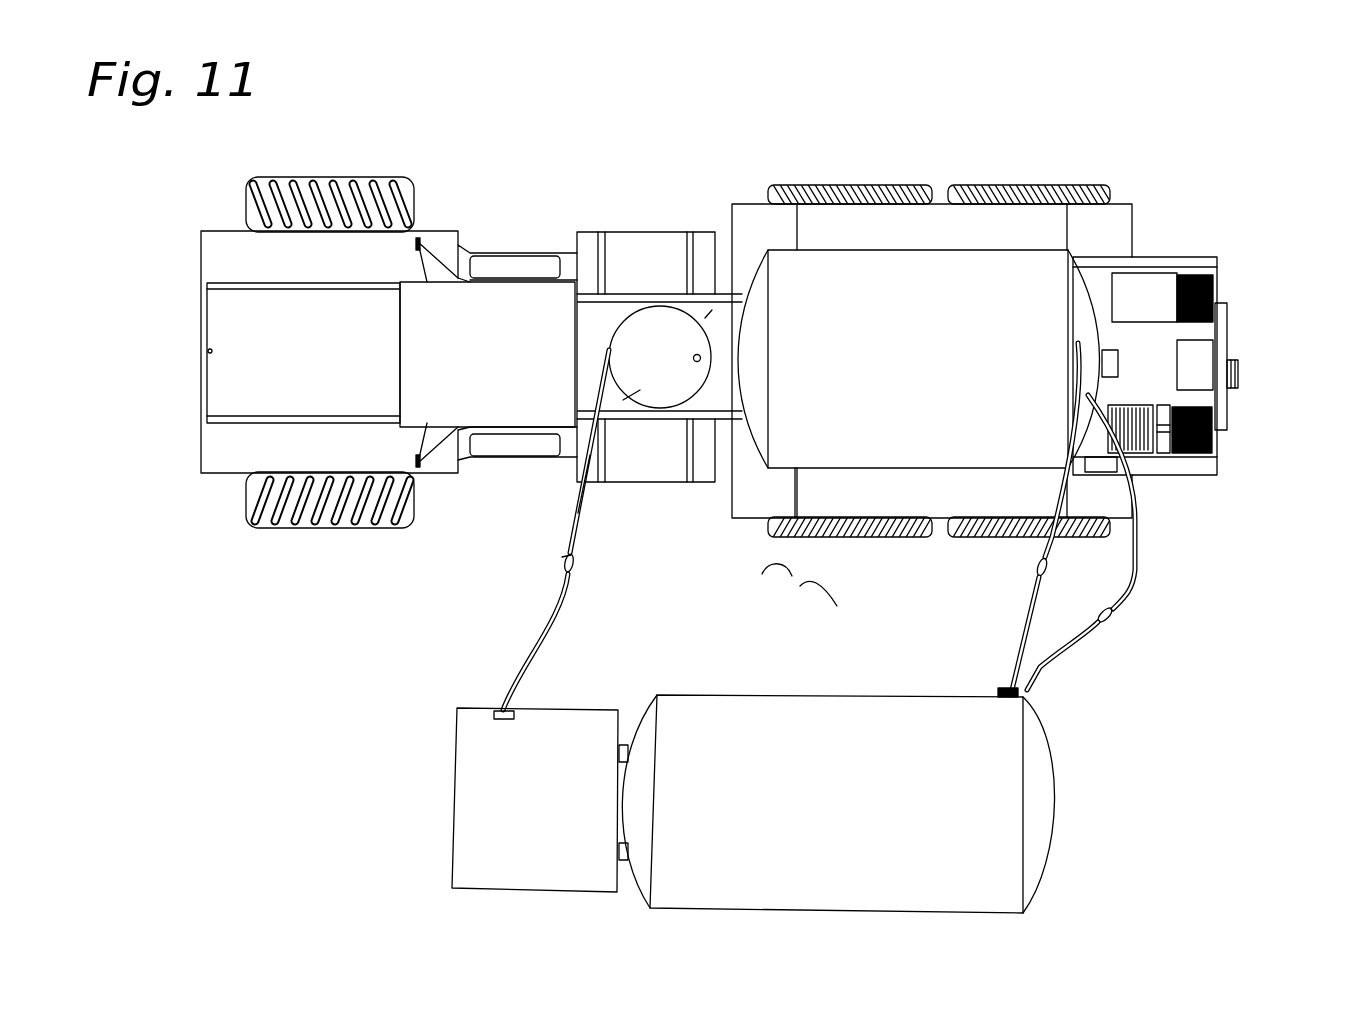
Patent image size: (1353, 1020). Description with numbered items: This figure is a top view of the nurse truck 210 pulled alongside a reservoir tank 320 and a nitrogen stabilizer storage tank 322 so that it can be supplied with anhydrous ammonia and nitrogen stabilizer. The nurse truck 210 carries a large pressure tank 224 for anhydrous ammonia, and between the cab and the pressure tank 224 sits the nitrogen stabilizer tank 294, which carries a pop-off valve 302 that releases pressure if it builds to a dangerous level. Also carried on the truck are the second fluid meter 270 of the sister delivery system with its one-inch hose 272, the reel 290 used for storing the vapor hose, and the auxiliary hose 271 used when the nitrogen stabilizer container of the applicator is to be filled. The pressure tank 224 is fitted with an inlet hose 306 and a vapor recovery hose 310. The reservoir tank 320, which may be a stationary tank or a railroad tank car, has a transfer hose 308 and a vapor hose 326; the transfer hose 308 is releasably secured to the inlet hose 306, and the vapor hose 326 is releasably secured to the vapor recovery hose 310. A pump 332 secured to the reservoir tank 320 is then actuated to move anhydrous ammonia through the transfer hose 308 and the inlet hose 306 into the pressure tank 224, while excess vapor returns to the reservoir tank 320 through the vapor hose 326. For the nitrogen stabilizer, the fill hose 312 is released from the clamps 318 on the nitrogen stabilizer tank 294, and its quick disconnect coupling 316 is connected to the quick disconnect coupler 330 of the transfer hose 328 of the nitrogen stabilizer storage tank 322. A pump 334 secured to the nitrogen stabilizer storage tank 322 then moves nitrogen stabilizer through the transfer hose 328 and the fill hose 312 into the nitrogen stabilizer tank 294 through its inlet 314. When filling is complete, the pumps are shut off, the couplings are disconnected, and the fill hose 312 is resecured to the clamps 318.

The nurse truck 210 is at (618, 173).
The pressure tank 224 is at (985, 360).
The second fluid meter 270 is at (787, 483).
The auxiliary hose 271 is at (1240, 372).
The hose 272 is at (751, 582).
The reel 290 is at (843, 604).
The nitrogen stabilizer tank 294 is at (705, 318).
The pop-off valve 302 is at (701, 357).
The inlet hose 306 is at (1060, 512).
The transfer hose 308 is at (1022, 620).
The vapor recovery hose 310 is at (1133, 582).
The fill hose 312 is at (580, 524).
The inlet 314 is at (609, 352).
The quick disconnect coupling 316 is at (562, 557).
The clamps 318 is at (621, 403).
The reservoir tank 320 is at (793, 690).
The nitrogen stabilizer storage tank 322 is at (566, 709).
The vapor hose 326 is at (1062, 656).
The transfer hose 328 is at (540, 646).
The quick disconnect coupler 330 is at (572, 565).
The pump 332 is at (1006, 698).
The pump 334 is at (499, 720).